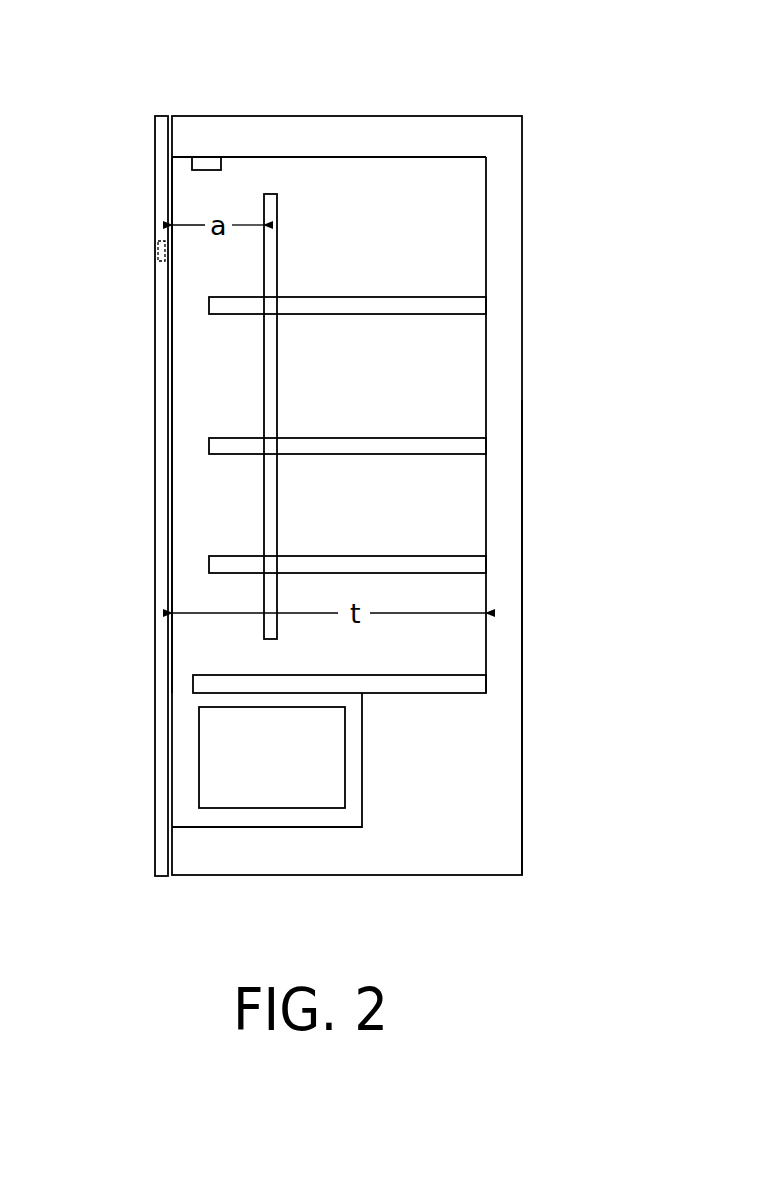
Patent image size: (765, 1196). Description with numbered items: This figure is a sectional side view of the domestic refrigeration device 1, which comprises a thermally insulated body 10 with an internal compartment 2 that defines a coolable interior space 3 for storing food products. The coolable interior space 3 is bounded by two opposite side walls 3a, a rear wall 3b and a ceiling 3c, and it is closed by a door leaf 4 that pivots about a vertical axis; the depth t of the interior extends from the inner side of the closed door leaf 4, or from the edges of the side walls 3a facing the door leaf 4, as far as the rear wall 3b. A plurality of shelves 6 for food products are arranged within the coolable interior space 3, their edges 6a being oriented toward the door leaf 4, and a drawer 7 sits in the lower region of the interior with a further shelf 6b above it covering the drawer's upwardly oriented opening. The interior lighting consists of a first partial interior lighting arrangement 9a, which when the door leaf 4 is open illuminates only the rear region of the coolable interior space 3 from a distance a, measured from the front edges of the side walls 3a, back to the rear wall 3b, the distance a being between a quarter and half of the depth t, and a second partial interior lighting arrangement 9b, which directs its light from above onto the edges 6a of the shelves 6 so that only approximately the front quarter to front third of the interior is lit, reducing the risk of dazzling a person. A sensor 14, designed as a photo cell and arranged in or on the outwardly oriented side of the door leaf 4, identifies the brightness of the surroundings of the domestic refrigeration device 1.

The domestic refrigeration device 1 is at (389, 441).
The internal compartment 2 is at (490, 543).
The coolable interior space 3 is at (329, 365).
The side walls 3a is at (287, 185).
The rear wall 3b is at (486, 378).
The ceiling 3c is at (422, 157).
The door leaf 4 is at (164, 848).
The shelves 6 is at (340, 438).
The edges of the shelves 6a is at (209, 304).
The further shelf 6b is at (208, 683).
The drawer 7 is at (267, 760).
The first partial interior lighting arrangement 9a is at (270, 388).
The second partial interior lighting arrangement 9b is at (203, 157).
The thermally insulated body 10 is at (508, 663).
The sensor 14 is at (158, 250).